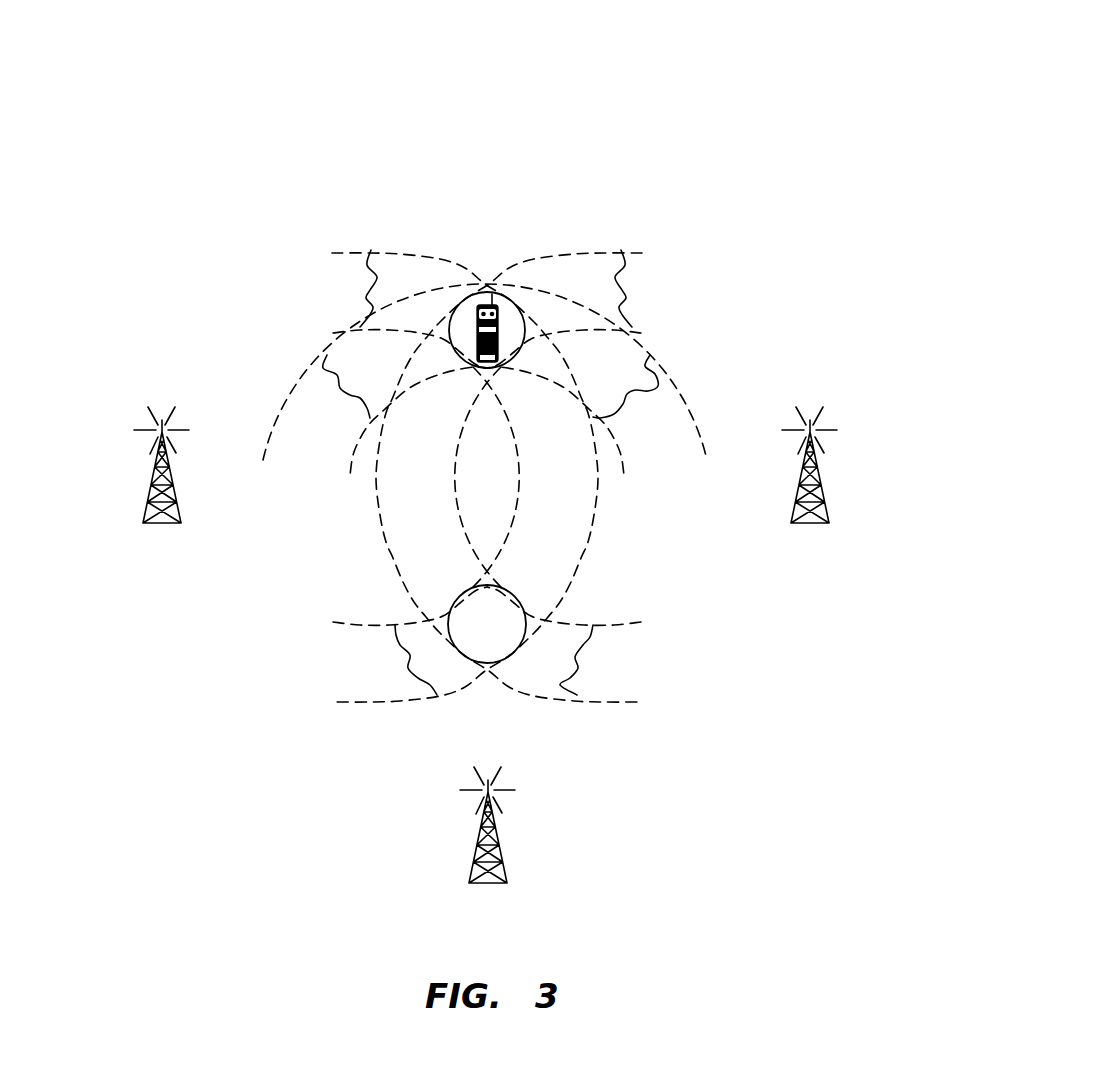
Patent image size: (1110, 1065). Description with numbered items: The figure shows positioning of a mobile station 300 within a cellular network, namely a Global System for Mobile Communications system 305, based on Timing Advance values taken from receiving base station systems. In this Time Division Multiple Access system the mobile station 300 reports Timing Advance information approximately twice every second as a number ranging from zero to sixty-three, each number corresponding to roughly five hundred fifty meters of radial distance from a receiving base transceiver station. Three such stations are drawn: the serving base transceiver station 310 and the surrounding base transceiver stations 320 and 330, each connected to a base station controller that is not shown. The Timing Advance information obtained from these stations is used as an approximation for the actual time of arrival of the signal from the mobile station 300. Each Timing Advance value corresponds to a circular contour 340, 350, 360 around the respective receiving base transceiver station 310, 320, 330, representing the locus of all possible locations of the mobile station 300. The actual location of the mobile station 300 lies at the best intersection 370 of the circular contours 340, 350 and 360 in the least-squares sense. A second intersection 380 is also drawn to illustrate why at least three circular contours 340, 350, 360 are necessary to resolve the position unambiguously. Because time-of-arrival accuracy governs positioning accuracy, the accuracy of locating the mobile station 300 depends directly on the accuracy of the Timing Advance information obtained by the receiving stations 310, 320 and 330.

The mobile station 300 is at (492, 362).
The Global System for Mobile Communications system 305 is at (640, 87).
The serving base transceiver station 310 is at (157, 523).
The surrounding base transceiver station 320 is at (812, 517).
The surrounding base transceiver station 330 is at (486, 885).
The circular contour 340 is at (371, 250).
The circular contour 350 is at (621, 250).
The circular contour 360 is at (327, 355).
The best intersection 370 is at (483, 288).
The intersection 380 is at (483, 668).